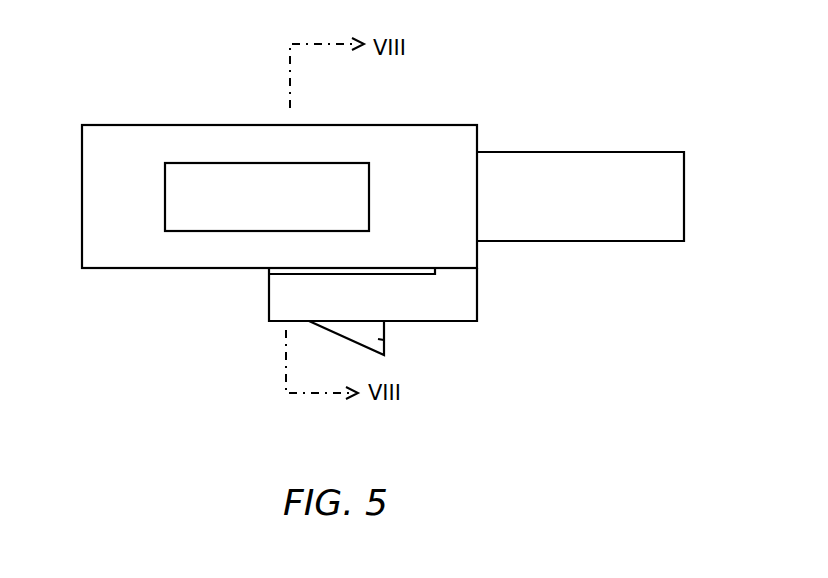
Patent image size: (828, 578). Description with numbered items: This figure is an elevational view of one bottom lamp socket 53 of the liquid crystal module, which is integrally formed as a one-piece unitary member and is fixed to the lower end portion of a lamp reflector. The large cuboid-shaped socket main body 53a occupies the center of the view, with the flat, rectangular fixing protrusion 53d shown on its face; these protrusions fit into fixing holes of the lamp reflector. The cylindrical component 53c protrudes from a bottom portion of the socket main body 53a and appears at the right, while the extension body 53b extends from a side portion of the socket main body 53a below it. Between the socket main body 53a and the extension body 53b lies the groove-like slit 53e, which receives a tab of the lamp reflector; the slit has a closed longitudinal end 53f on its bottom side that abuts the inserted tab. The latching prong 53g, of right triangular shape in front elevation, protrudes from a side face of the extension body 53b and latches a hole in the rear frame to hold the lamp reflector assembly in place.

The bottom lamp socket 53 is at (162, 110).
The socket main body 53a is at (97, 192).
The extension body 53b is at (292, 301).
The cylindrical component 53c is at (562, 158).
The fixing protrusion 53d is at (238, 173).
The groove-like slit 53e is at (393, 274).
The closed longitudinal end 53f is at (437, 269).
The latching prong 53g is at (385, 340).